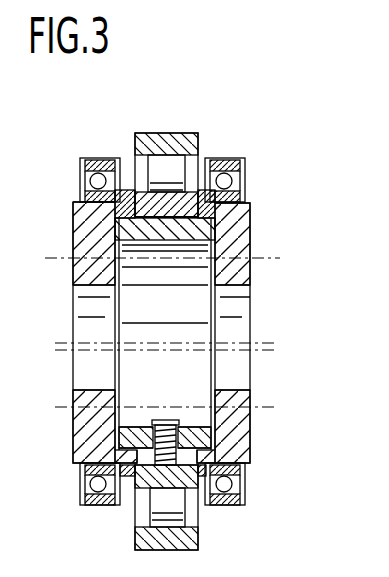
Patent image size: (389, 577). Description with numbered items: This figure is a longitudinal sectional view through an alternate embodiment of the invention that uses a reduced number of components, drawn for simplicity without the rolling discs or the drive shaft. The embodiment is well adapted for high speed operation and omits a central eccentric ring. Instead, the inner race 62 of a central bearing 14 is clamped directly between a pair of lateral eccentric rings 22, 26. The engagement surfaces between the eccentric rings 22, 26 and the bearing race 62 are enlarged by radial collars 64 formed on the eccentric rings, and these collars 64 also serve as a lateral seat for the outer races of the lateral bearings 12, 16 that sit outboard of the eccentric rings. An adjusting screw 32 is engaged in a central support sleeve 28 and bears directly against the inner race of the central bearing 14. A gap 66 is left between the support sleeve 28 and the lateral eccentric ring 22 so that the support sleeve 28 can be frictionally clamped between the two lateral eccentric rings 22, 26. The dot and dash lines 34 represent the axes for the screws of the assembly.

The central bearing 14 is at (168, 168).
The lateral bearing 12 is at (97, 177).
The lateral bearing 16 is at (224, 178).
The radial collar 64 is at (130, 198).
The inner race 62 is at (198, 192).
The lateral eccentric ring 22 is at (87, 230).
The lateral eccentric ring 26 is at (233, 232).
The screw axis 34 is at (54, 258).
The adjusting screw 32 is at (170, 420).
The gap 66 is at (112, 441).
The central support sleeve 28 is at (203, 442).